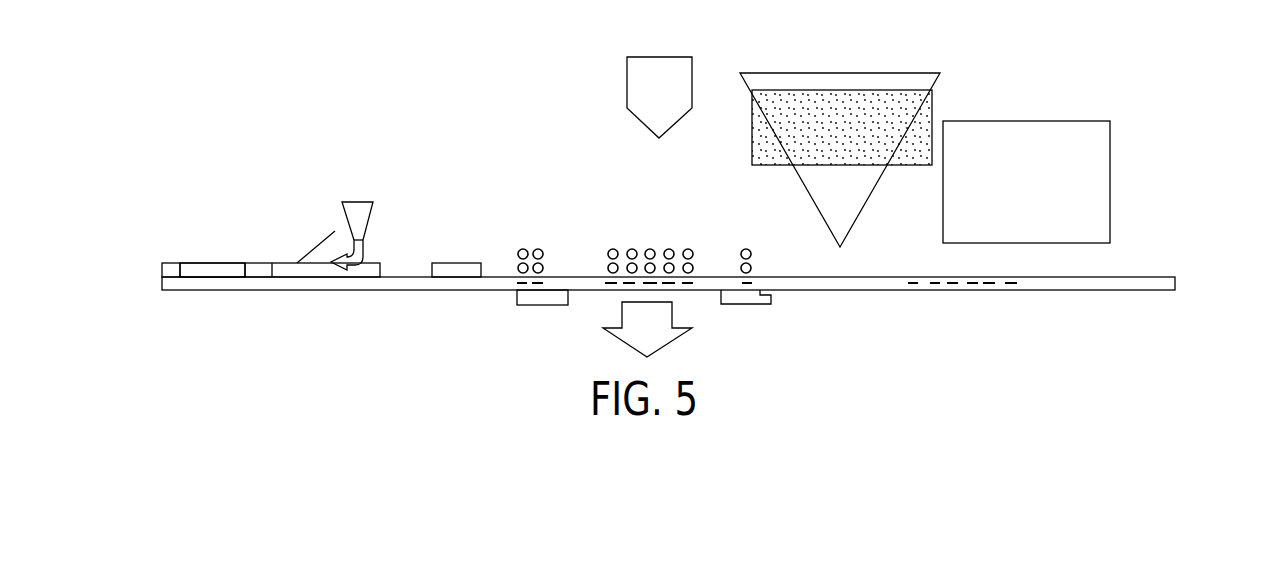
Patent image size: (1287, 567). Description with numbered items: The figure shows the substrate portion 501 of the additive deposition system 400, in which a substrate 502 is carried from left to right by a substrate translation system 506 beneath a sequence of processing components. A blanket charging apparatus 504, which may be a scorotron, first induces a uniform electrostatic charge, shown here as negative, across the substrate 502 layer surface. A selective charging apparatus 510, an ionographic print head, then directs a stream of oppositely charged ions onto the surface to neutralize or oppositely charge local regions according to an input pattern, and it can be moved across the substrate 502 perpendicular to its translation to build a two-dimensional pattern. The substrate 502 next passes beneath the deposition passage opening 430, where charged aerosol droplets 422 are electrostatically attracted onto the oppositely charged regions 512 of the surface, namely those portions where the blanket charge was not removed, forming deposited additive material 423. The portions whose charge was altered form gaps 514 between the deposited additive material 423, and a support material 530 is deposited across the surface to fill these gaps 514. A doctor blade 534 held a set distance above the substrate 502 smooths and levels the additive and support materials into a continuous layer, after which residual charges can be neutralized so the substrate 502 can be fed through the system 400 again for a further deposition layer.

The additive deposition system 400 is at (132, 135).
The substrate portion 501 is at (150, 233).
The additive material 423 is at (212, 264).
The doctor blade 534 is at (317, 250).
The support material 530 is at (360, 202).
The gaps 514 is at (416, 255).
The deposition passage opening 430 is at (752, 190).
The selective charging apparatus 510 is at (838, 73).
The blanket charging apparatus 504 is at (1110, 182).
The substrate 502 is at (1175, 283).
The oppositely charged regions 512 is at (686, 284).
The substrate translation system 506 is at (748, 305).
The charged aerosol droplets 422 is at (752, 266).